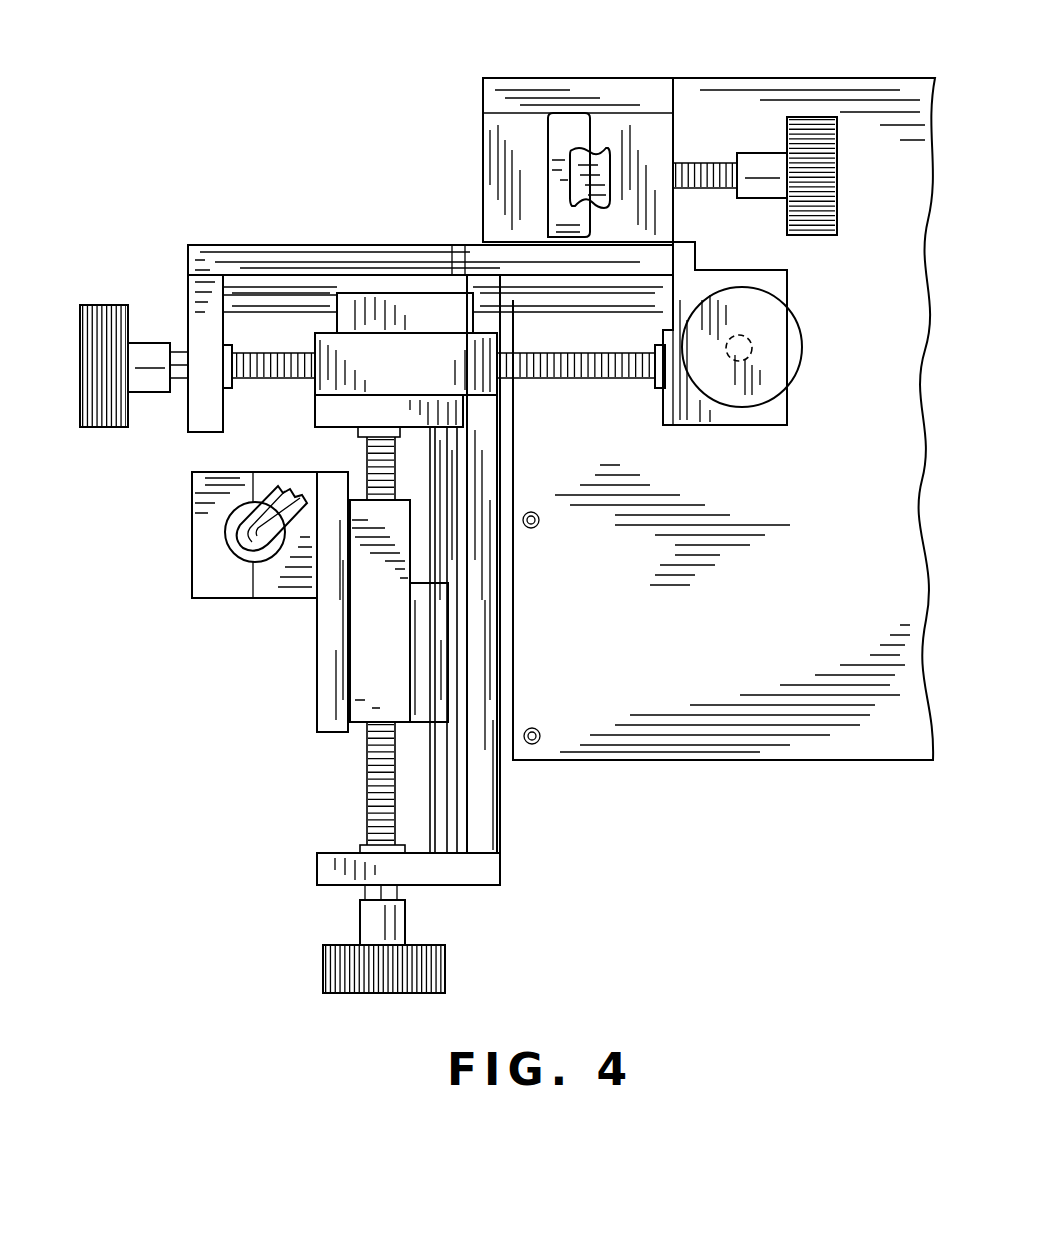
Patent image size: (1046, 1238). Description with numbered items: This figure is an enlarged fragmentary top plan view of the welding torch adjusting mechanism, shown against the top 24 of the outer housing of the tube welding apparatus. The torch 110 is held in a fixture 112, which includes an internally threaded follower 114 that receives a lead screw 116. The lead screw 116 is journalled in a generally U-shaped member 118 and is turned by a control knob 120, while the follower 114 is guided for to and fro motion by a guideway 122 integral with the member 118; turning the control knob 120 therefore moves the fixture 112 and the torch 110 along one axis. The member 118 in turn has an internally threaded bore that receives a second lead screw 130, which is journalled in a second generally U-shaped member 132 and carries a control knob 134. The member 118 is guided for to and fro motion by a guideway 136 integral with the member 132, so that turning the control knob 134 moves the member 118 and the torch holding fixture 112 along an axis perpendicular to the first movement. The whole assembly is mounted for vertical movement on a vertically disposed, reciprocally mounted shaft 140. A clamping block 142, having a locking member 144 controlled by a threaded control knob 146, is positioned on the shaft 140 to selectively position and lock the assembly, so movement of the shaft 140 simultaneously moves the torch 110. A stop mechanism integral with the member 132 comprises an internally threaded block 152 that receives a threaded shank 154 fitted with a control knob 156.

The top 24 is at (735, 671).
The torch 110 is at (250, 553).
The fixture 112 is at (202, 555).
The internally threaded follower 114 is at (363, 725).
The lead screw 116 is at (370, 797).
The generally U-shaped member 118 is at (500, 565).
The control knob 120 is at (325, 990).
The guideway 122 is at (450, 760).
The lead screw 130 is at (630, 368).
The generally U-shaped member 132 is at (312, 258).
The control knob 134 is at (110, 420).
The guideway 136 is at (248, 298).
The vertically disposed reciprocally mounted shaft 140 is at (553, 183).
The clamping block 142 is at (553, 90).
The locking member 144 is at (600, 148).
The threaded control knob 146 is at (762, 160).
The internally threaded block 152 is at (765, 425).
The threaded shank 154 is at (752, 340).
The control knob 156 is at (795, 347).